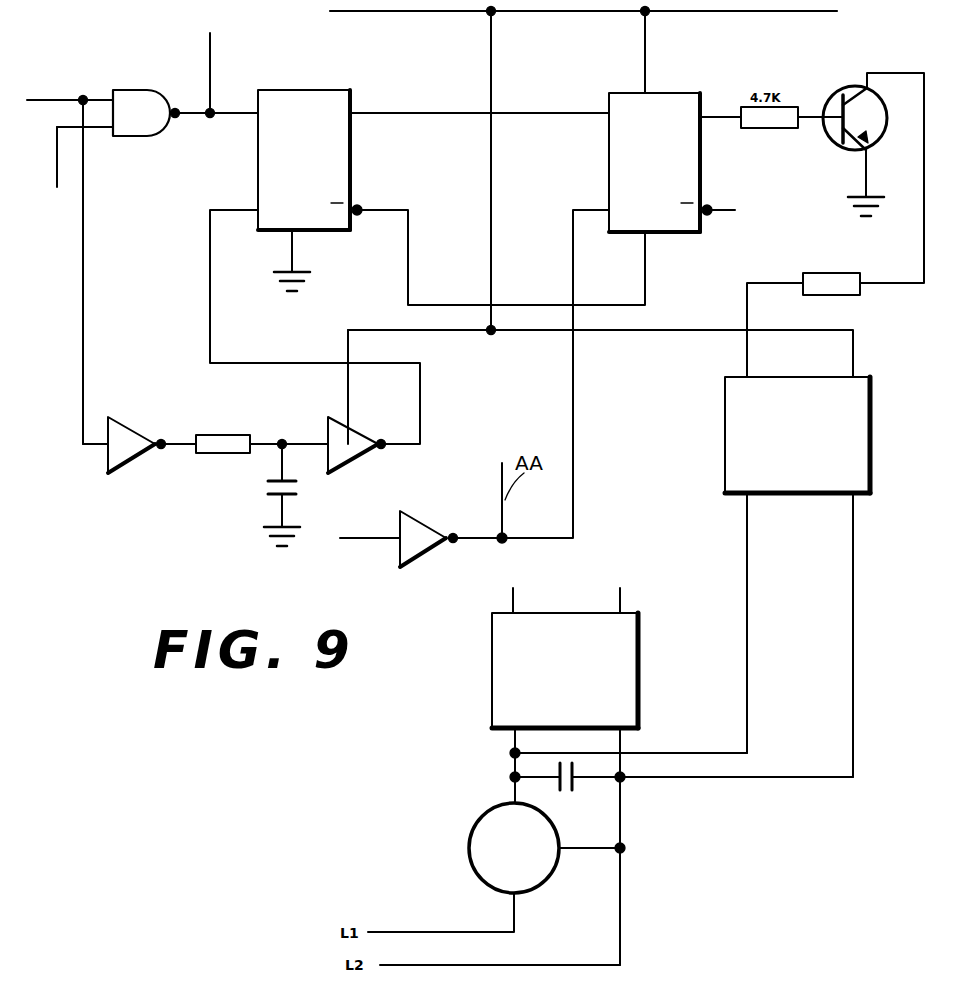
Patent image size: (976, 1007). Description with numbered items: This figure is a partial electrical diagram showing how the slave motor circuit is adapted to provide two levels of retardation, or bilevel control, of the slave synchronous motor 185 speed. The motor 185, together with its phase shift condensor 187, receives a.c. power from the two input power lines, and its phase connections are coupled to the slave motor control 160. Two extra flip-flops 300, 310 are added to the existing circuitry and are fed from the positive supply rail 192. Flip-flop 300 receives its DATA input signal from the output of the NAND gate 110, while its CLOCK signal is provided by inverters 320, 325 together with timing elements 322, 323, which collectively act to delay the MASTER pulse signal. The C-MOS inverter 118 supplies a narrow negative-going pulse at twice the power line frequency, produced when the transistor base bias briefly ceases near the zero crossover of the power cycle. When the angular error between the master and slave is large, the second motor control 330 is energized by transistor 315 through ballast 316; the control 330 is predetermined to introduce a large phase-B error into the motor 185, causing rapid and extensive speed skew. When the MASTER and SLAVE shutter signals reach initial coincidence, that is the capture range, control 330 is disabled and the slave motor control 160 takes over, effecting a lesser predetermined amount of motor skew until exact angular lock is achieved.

The NAND gate 110 is at (137, 100).
The C-MOS inverter 118 is at (426, 531).
The slave motor control 160 is at (625, 668).
The SLAVE synchronous motor 185 is at (472, 832).
The phase shift condensor 187 is at (567, 792).
The supply voltage line 192 is at (612, 12).
The flip-flop 300 is at (318, 95).
The flip-flop 310 is at (673, 102).
The transistor 315 is at (840, 152).
The ballast 316 is at (806, 274).
The inverter 320 is at (138, 436).
The timing element 322 is at (226, 452).
The timing element 323 is at (272, 497).
The inverter 325 is at (368, 438).
The motor control 330 is at (732, 454).